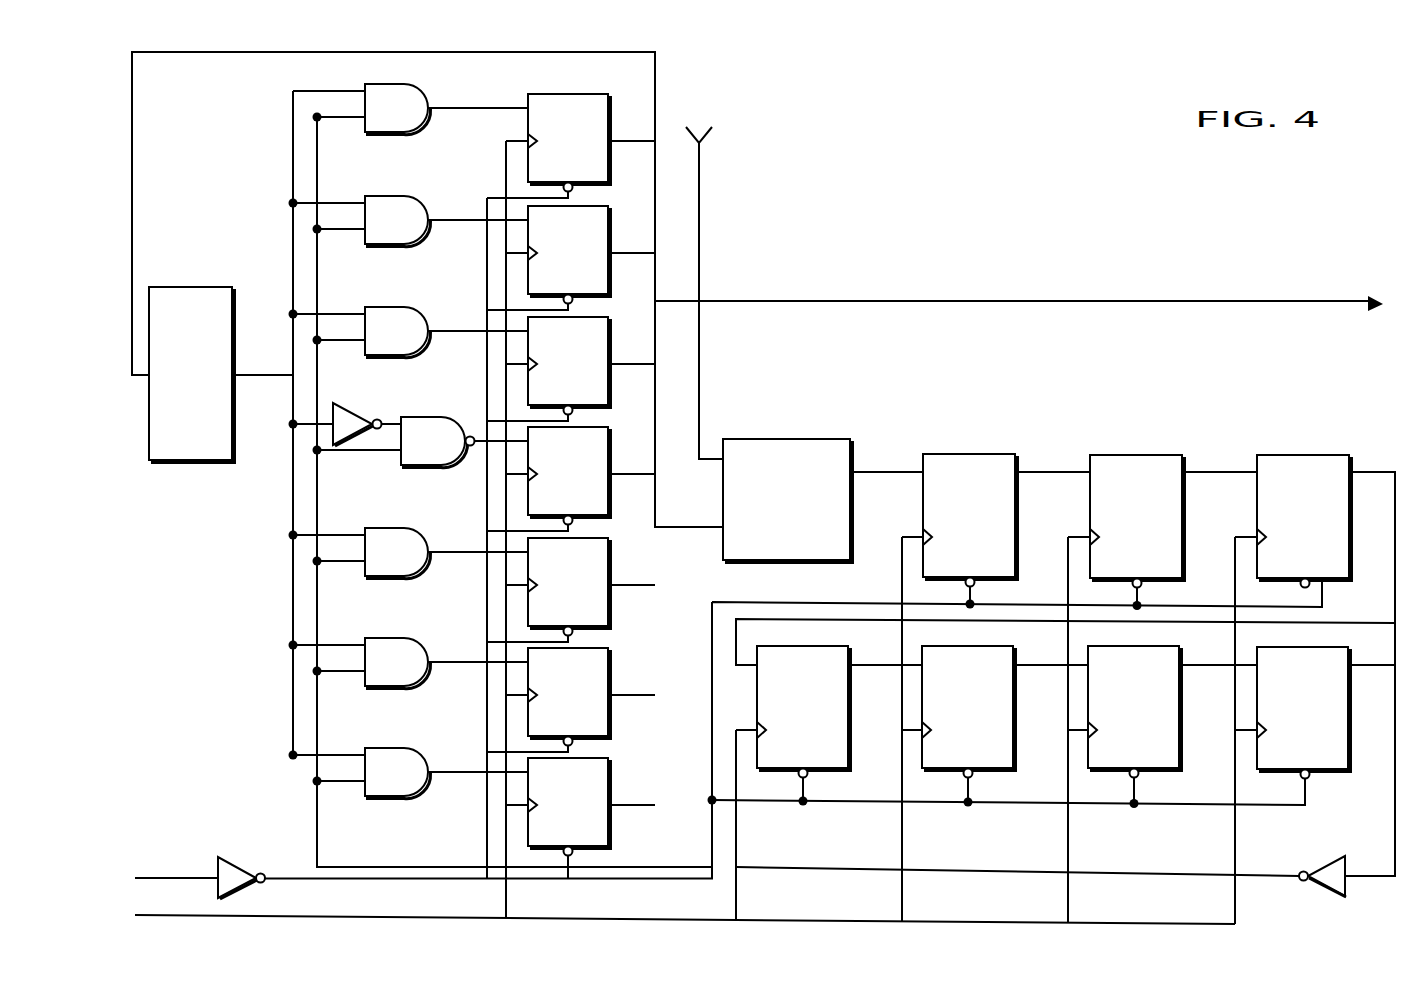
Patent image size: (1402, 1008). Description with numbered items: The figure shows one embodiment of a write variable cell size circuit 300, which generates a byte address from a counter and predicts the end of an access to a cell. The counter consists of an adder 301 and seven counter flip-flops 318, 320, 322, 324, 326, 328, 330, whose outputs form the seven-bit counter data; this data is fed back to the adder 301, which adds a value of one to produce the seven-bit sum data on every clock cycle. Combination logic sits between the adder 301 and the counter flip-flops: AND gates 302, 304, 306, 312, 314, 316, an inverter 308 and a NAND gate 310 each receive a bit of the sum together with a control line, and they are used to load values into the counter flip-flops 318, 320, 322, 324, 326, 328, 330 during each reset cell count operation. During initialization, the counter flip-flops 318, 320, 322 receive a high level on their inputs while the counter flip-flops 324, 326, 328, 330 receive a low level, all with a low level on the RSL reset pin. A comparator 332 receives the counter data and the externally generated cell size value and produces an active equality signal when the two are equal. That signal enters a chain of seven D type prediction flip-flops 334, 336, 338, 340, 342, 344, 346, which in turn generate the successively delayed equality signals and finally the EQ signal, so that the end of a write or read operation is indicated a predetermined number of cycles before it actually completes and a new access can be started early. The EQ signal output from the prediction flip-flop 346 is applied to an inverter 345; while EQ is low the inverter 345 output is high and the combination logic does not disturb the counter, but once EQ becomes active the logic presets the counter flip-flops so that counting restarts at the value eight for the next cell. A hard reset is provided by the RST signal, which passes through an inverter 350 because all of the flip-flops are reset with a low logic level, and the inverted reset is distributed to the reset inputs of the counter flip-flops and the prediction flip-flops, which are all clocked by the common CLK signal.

The write variable cell size circuit 300 is at (986, 196).
The adder 301 is at (171, 425).
The AND gate 302 is at (412, 116).
The AND gate 304 is at (412, 228).
The AND gate 306 is at (412, 339).
The inverter 308 is at (353, 403).
The NAND gate 310 is at (447, 451).
The AND gate 312 is at (412, 560).
The AND gate 314 is at (412, 670).
The AND gate 316 is at (412, 780).
The counter flip-flop 318 is at (549, 151).
The counter flip-flop 320 is at (549, 263).
The counter flip-flop 322 is at (549, 374).
The counter flip-flop 324 is at (549, 484).
The counter flip-flop 326 is at (549, 595).
The counter flip-flop 328 is at (549, 705).
The counter flip-flop 330 is at (549, 815).
The comparator 332 is at (767, 529).
The prediction flip-flop 334 is at (950, 523).
The prediction flip-flop 336 is at (1117, 524).
The prediction flip-flop 338 is at (1284, 524).
The prediction flip-flop 340 is at (784, 715).
The prediction flip-flop 342 is at (949, 715).
The prediction flip-flop 344 is at (1115, 715).
The inverter 345 is at (1330, 857).
The prediction flip-flop 346 is at (1284, 716).
The inverter 350 is at (237, 858).